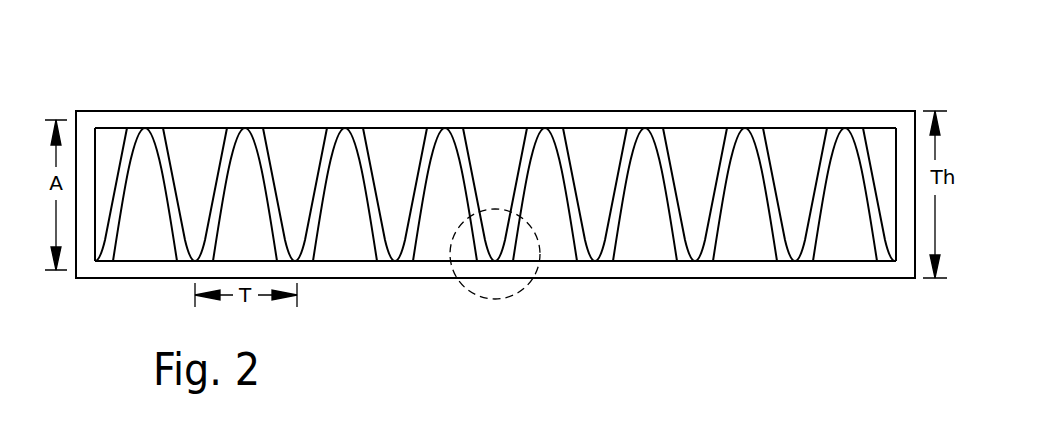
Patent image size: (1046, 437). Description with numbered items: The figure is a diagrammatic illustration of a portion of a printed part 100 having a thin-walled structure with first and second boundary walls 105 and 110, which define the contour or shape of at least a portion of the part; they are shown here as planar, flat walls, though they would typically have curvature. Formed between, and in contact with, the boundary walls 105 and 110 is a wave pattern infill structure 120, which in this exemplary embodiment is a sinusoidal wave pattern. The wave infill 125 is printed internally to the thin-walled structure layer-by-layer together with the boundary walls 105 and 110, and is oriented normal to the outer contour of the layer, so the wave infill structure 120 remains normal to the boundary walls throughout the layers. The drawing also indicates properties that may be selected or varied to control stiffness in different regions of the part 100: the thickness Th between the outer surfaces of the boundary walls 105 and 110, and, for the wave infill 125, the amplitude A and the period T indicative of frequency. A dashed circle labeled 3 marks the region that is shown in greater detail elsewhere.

The part 100 is at (787, 62).
The first boundary wall 105 is at (396, 113).
The second boundary wall 110 is at (757, 268).
The wave pattern infill structure 120 is at (307, 150).
The wave infill 125 is at (622, 153).
The detail region shown in FIG. 3 is at (525, 287).